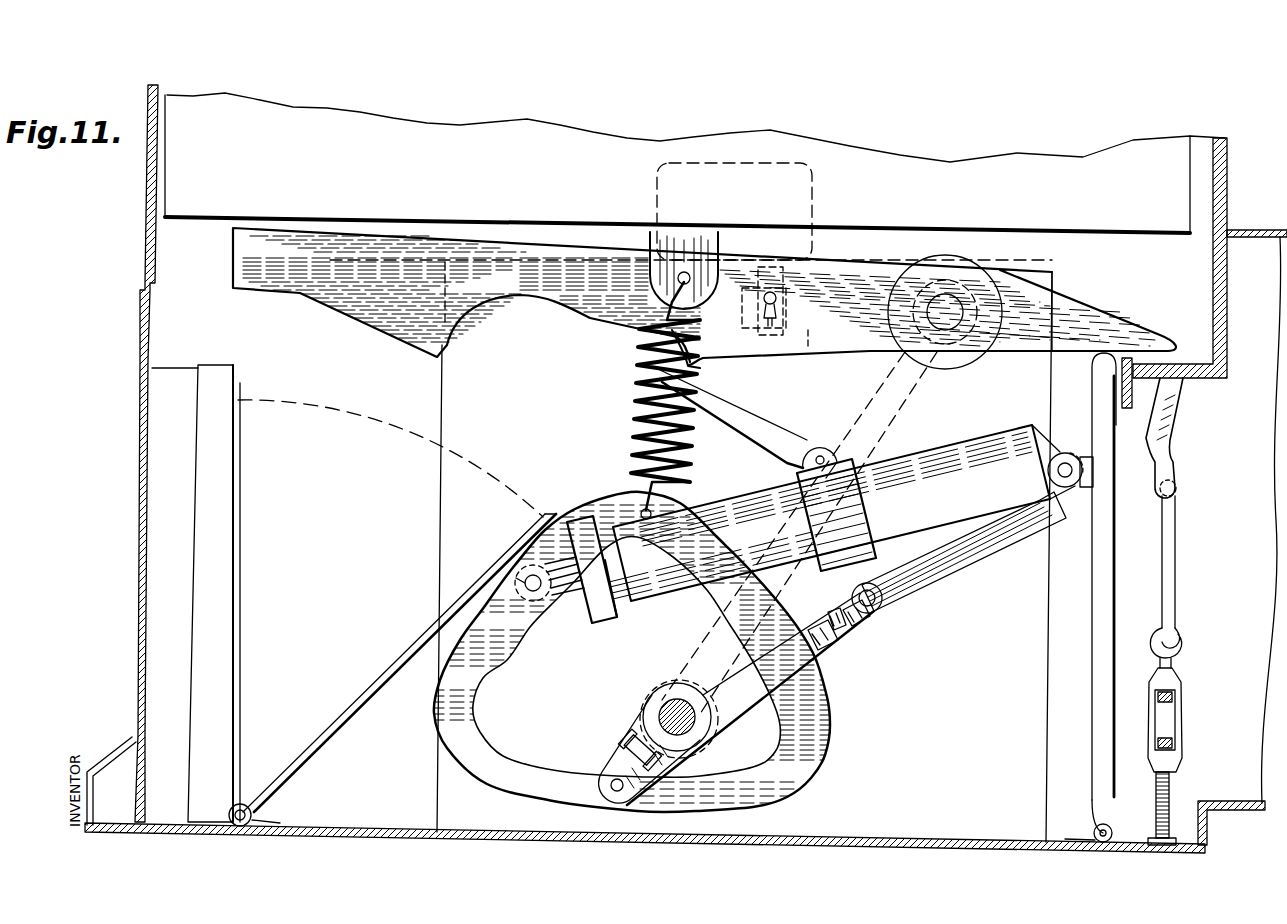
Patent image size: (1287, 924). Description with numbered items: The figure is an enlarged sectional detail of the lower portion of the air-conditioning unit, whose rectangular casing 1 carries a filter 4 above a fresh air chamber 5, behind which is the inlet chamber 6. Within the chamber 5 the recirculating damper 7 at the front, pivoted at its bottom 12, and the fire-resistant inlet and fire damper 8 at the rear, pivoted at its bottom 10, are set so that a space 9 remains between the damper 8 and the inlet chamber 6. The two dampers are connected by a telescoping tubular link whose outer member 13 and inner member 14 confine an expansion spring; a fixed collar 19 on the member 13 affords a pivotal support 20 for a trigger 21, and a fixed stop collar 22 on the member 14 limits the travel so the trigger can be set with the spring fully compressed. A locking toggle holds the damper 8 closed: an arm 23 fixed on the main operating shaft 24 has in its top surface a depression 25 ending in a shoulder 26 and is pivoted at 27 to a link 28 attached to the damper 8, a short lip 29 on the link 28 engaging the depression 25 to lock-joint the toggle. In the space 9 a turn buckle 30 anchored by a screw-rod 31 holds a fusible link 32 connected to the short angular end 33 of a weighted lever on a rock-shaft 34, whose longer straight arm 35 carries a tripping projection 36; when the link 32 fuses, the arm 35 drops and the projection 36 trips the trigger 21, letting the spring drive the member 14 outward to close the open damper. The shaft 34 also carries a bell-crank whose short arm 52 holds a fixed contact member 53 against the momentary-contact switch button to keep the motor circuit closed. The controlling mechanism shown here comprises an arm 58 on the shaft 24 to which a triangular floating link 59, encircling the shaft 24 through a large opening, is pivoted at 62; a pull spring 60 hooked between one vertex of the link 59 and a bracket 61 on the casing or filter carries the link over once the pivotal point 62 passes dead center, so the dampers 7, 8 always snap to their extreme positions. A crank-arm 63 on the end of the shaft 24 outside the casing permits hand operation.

The casing 1 is at (1228, 197).
The filter 4 is at (191, 217).
The fresh air chamber 5 is at (1004, 557).
The inlet chamber 6 is at (1252, 247).
The recirculating damper 7 is at (378, 688).
The inlet and fire damper 8 is at (1098, 600).
The space 9 is at (1128, 577).
The pivot of damper 8 10 is at (1100, 846).
The pivot of damper 7 12 is at (240, 828).
The outer tubular member 13 is at (945, 452).
The inner tubular member 14 is at (564, 622).
The fixed collar 19 is at (862, 497).
The pivotal support 20 is at (820, 446).
The trigger 21 is at (735, 416).
The fixed stop collar 22 is at (620, 622).
The arm 23 is at (750, 699).
The main or operating shaft 24 is at (669, 700).
The depression 25 is at (843, 644).
The shoulder 26 is at (872, 621).
The pivot 27 is at (883, 601).
The link 28 is at (950, 563).
The lip 29 is at (826, 618).
The turn buckle 30 is at (1182, 728).
The screw-rod 31 is at (1170, 792).
The fusible link 32 is at (1172, 584).
The short angular end 33 is at (1168, 463).
The rock-shaft 34 is at (950, 302).
The longer straight arm 35 is at (331, 304).
The tripping projection 36 is at (703, 366).
The short arm 52 is at (806, 340).
The fixed contact member 53 is at (792, 300).
The arm 58 is at (612, 758).
The triangular floating link 59 is at (800, 763).
The pull spring 60 is at (634, 396).
The bracket or ear 61 is at (665, 242).
The pivotal point 62 is at (608, 790).
The crank-arm 63 is at (886, 371).